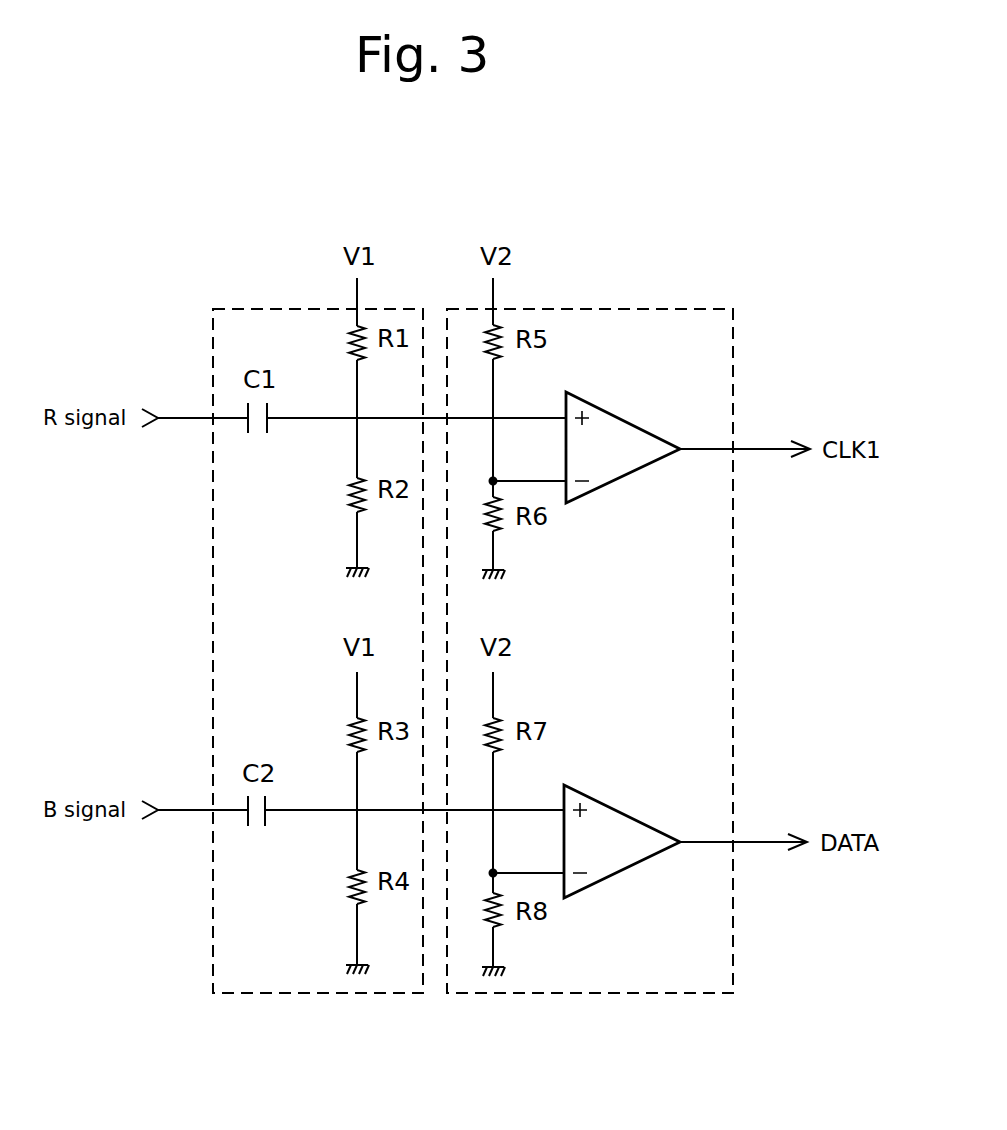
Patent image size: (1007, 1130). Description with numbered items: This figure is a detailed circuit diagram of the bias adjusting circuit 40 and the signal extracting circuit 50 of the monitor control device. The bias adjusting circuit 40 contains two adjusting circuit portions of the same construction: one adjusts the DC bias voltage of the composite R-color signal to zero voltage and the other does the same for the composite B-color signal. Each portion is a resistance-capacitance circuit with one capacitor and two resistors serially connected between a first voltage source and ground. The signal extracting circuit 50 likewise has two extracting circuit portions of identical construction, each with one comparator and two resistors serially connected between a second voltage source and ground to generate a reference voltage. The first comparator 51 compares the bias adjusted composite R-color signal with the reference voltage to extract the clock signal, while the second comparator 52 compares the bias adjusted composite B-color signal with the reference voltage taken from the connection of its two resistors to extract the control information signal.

The bias adjusting circuit 40 is at (260, 309).
The signal extracting circuit 50 is at (638, 309).
The first comparator 51 is at (607, 413).
The second comparator 52 is at (610, 806).